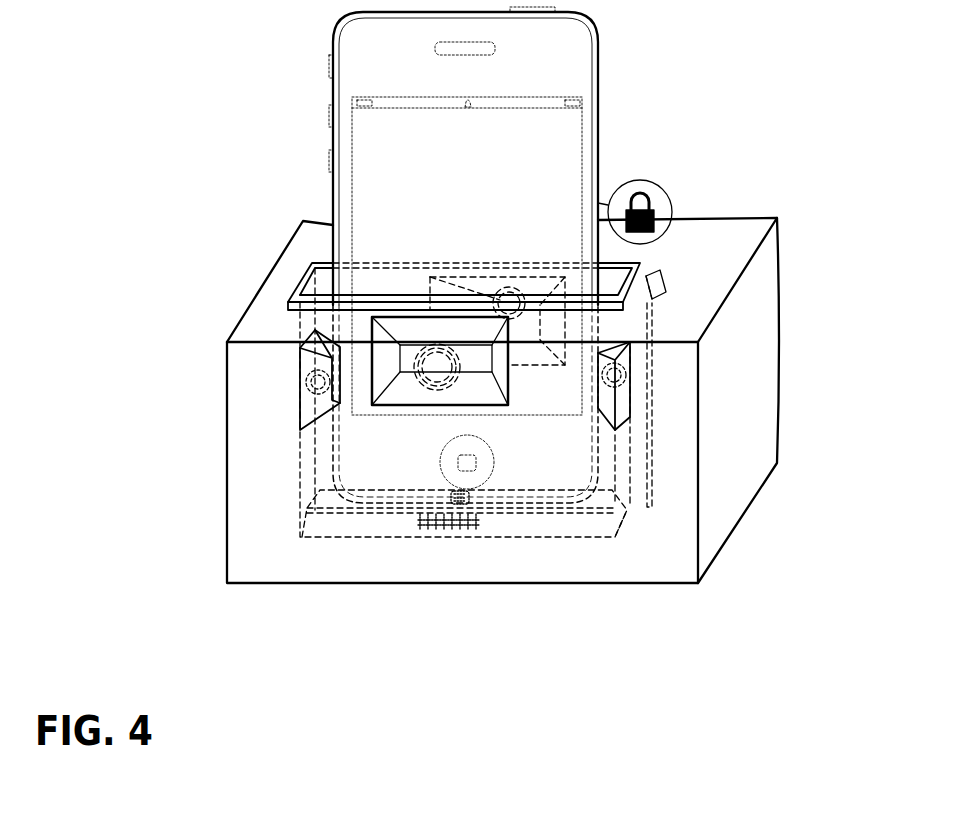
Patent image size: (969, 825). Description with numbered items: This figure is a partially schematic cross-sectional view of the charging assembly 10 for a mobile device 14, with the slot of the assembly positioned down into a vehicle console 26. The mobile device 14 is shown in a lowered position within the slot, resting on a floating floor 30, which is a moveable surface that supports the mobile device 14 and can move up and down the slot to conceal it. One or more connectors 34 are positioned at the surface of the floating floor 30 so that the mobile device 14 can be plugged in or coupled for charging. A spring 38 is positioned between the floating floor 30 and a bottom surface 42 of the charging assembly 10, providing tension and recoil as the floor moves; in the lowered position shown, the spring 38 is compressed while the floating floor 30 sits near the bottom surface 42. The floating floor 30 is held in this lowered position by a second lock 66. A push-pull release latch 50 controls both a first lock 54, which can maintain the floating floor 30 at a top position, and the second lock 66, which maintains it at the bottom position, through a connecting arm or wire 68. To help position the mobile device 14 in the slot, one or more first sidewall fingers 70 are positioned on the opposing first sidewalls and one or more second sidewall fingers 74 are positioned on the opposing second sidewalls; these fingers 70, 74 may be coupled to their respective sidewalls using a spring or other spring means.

The charging assembly 10 is at (238, 200).
The mobile device 14 is at (563, 62).
The console 26 is at (718, 247).
The floating floor 30 is at (598, 502).
The connector 34 is at (433, 497).
The spring 38 is at (443, 523).
The bottom surface 42 is at (520, 522).
The push-pull release latch 50 is at (657, 270).
The first lock 54 is at (630, 310).
The second lock 66 is at (635, 500).
The connecting arm or wire 68 is at (648, 432).
The first sidewall fingers 70 is at (470, 285).
The second sidewall fingers 74 is at (307, 360).